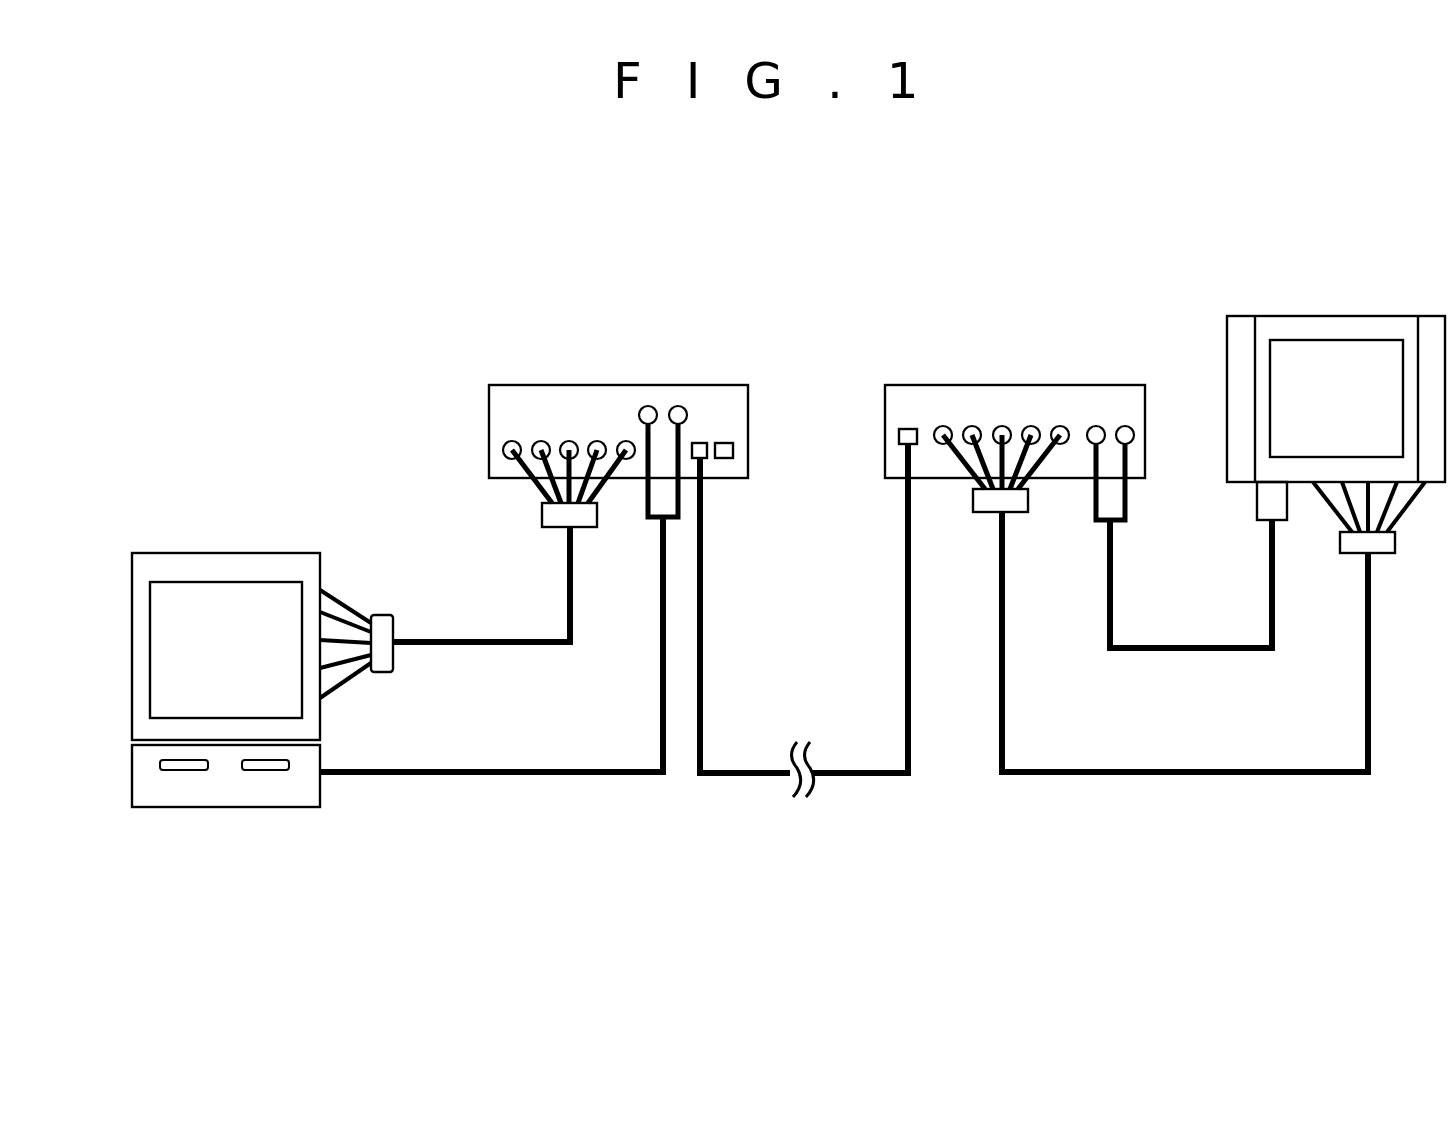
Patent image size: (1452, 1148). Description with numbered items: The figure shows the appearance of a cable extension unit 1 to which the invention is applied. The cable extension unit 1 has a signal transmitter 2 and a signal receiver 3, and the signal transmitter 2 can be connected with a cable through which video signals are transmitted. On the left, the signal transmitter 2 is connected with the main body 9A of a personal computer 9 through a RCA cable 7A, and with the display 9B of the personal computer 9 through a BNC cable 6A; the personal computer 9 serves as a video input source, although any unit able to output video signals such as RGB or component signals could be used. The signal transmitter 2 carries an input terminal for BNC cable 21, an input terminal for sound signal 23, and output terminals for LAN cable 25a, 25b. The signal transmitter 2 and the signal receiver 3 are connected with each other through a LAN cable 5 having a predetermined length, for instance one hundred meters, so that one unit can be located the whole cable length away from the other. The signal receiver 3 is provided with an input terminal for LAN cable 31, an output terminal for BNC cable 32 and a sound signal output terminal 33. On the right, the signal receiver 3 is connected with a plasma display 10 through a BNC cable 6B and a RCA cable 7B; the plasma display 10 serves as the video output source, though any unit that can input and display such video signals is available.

The cable extension unit 1 is at (815, 248).
The signal transmitter 2 is at (613, 345).
The signal receiver 3 is at (1030, 333).
The LAN cable 5 is at (845, 777).
The BNC cable 6A is at (478, 638).
The BNC cable 6B is at (1200, 776).
The RCA cable 7A is at (497, 776).
The RCA cable 7B is at (1185, 646).
The personal computer 9 is at (262, 682).
The main body 9A is at (262, 808).
The display 9B is at (302, 552).
The plasma display 10 is at (1345, 316).
The input terminal for BNC cable 21 is at (641, 441).
The input terminal for sound signal 23 is at (692, 406).
The output terminal for LAN cable 25a is at (702, 443).
The output terminal for LAN cable 25b is at (723, 443).
The input terminal for LAN cable 31 is at (908, 429).
The output terminal for BNC cable 32 is at (1078, 425).
The sound signal output terminal 33 is at (1140, 422).